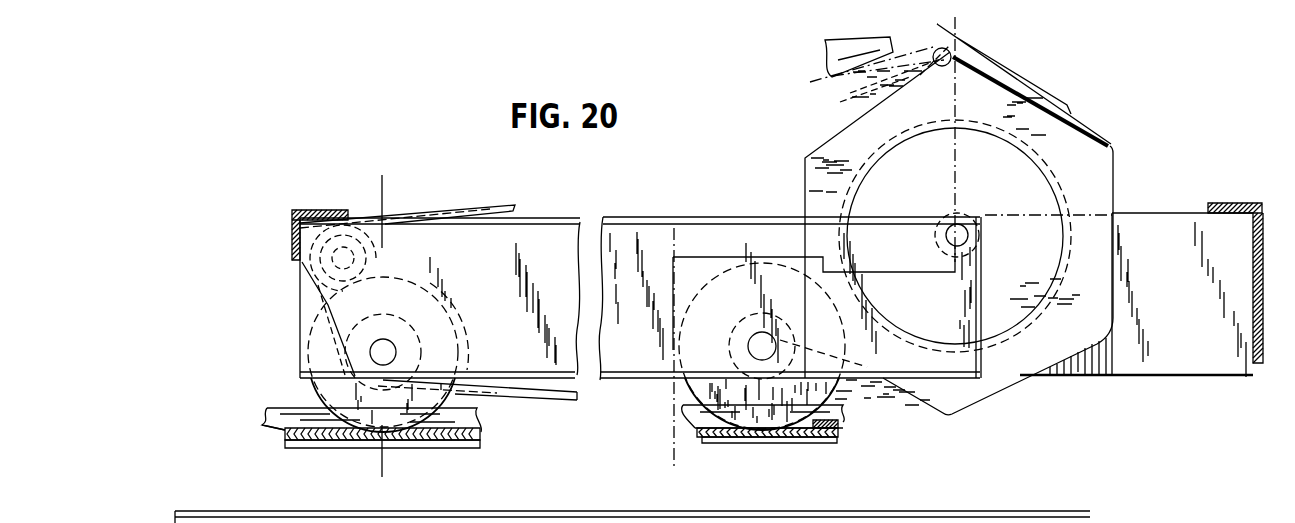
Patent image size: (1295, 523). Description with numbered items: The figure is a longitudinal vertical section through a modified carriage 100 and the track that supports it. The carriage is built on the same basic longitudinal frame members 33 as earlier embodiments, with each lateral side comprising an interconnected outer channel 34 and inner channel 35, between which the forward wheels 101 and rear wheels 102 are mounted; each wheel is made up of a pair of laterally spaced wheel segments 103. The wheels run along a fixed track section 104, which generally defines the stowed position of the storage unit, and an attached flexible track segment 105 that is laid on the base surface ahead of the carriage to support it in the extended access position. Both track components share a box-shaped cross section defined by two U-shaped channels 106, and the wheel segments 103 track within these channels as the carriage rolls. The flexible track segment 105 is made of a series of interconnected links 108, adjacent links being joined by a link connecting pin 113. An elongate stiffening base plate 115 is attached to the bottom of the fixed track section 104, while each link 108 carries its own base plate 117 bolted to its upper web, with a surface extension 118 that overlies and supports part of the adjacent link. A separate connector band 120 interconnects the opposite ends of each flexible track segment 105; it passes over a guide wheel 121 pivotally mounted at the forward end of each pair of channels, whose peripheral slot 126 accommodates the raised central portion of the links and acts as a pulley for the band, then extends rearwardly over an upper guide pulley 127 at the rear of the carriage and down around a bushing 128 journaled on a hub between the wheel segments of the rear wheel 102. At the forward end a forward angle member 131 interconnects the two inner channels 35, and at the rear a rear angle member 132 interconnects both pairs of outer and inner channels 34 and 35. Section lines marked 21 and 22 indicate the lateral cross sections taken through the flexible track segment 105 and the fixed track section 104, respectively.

The section line 21- 21 is at (905, 35).
The section line 22- 22 is at (333, 190).
The longitudinal frame members 33 is at (733, 217).
The outer channels 34 is at (1215, 358).
The inner channels 35 is at (620, 242).
The carriage 100 is at (1149, 204).
The forward wheels 101 is at (836, 386).
The rear wheels 102 is at (309, 395).
The wheel segments 103 is at (357, 408).
The fixed track section 104 is at (276, 437).
The flexible track segment 105 is at (1018, 65).
The U-shaped channels 106 is at (447, 424).
The links 108 is at (832, 78).
The link connecting pin 113 is at (940, 72).
The base plate 115 is at (445, 448).
The base plate 117 is at (988, 52).
The surface extension 118 is at (880, 84).
The connector band 120 is at (482, 206).
The guide wheel 121 is at (1113, 165).
The peripheral slot 126 is at (1052, 298).
The upper guide pulley 127 is at (363, 247).
The bushing 128 is at (447, 302).
The forward angle member 131 is at (1262, 228).
The rear angle member 132 is at (313, 210).